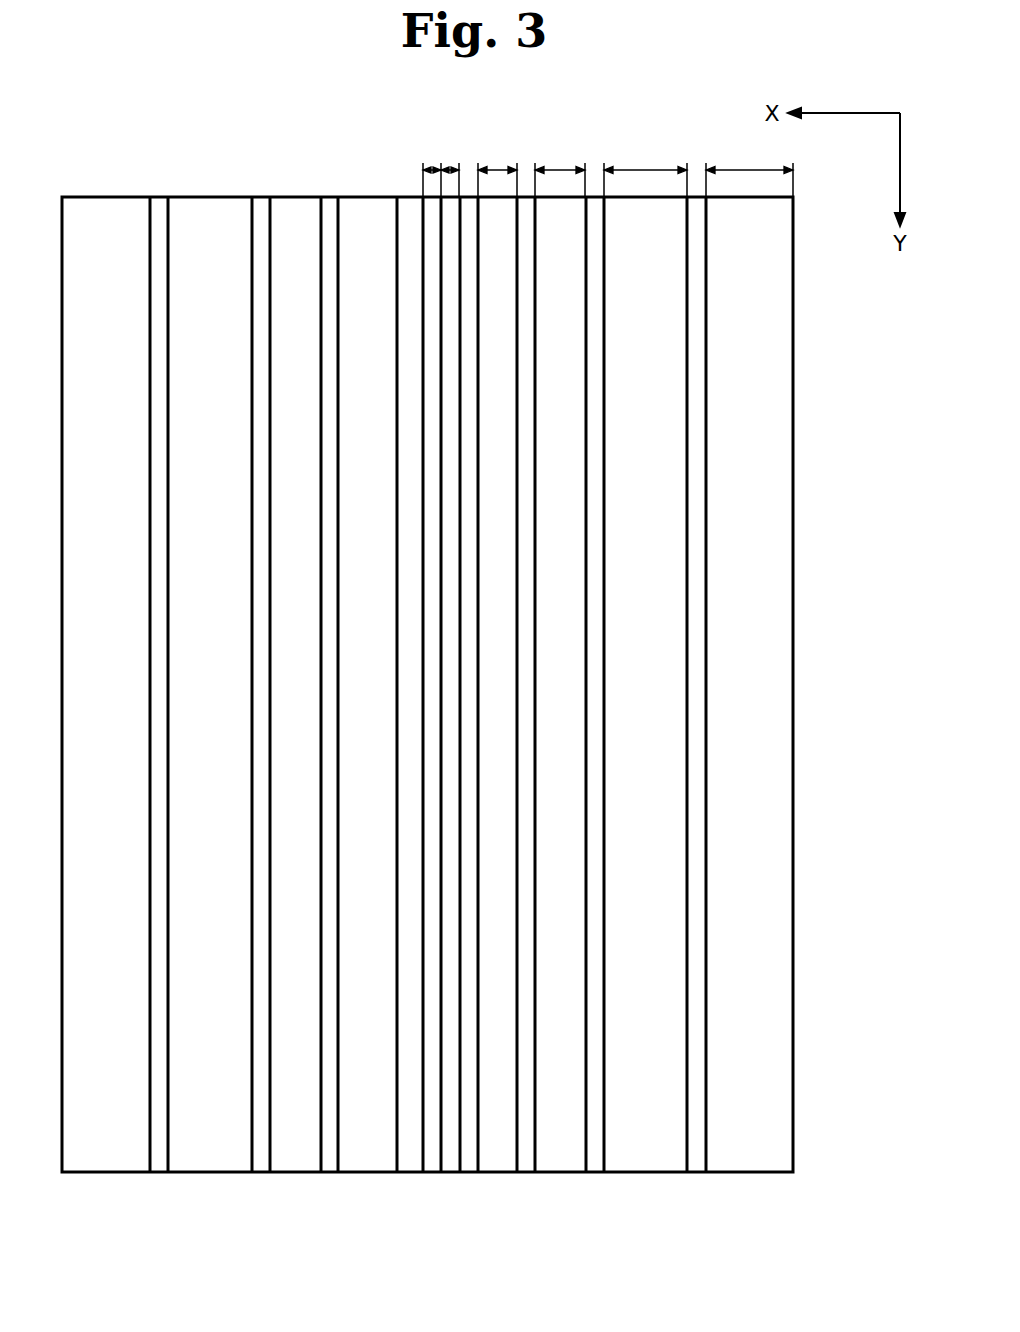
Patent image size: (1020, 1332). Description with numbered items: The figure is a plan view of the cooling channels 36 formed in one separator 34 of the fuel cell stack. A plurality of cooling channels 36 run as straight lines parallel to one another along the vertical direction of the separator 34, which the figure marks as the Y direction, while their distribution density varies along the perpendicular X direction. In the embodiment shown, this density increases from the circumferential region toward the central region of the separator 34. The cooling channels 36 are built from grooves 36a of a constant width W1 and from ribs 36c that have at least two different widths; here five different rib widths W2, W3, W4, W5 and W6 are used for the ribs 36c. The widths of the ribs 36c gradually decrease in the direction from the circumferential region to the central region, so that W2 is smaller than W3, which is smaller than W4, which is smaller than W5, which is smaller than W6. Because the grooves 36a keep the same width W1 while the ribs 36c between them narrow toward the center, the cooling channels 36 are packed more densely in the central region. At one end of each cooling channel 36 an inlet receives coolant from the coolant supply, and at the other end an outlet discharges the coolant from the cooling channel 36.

The separator 34 is at (793, 548).
The cooling channels 36 is at (389, 732).
The grooves 36a is at (432, 1172).
The ribs 36c is at (411, 1172).
The groove width W1 is at (431, 167).
The first rib width W2 is at (451, 156).
The second rib width W3 is at (497, 157).
The third rib width W4 is at (560, 157).
The fourth rib width W5 is at (645, 157).
The fifth rib width W6 is at (749, 157).